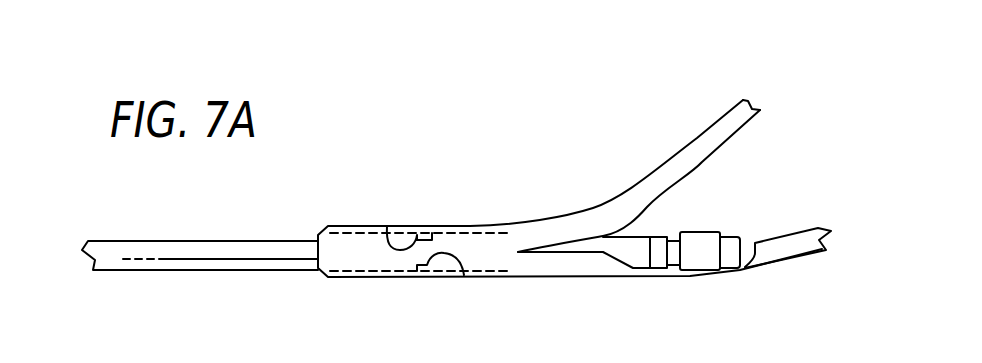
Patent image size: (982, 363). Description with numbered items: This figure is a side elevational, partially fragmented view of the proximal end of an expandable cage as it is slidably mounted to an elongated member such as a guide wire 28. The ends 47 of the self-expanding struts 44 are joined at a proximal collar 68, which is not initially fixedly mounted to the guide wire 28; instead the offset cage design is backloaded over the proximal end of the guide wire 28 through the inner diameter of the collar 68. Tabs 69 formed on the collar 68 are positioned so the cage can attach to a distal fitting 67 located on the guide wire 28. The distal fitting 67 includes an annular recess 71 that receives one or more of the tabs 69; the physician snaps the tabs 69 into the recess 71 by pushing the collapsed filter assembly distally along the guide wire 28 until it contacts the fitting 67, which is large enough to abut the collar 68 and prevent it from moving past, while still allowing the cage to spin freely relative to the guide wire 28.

The guide wire 28 is at (193, 252).
The collar 68 is at (365, 278).
The tabs 69 is at (387, 226).
The ends of the struts 47 is at (587, 212).
The struts 44 is at (725, 130).
The distal fitting 67 is at (703, 245).
The annular recess 71 is at (673, 238).